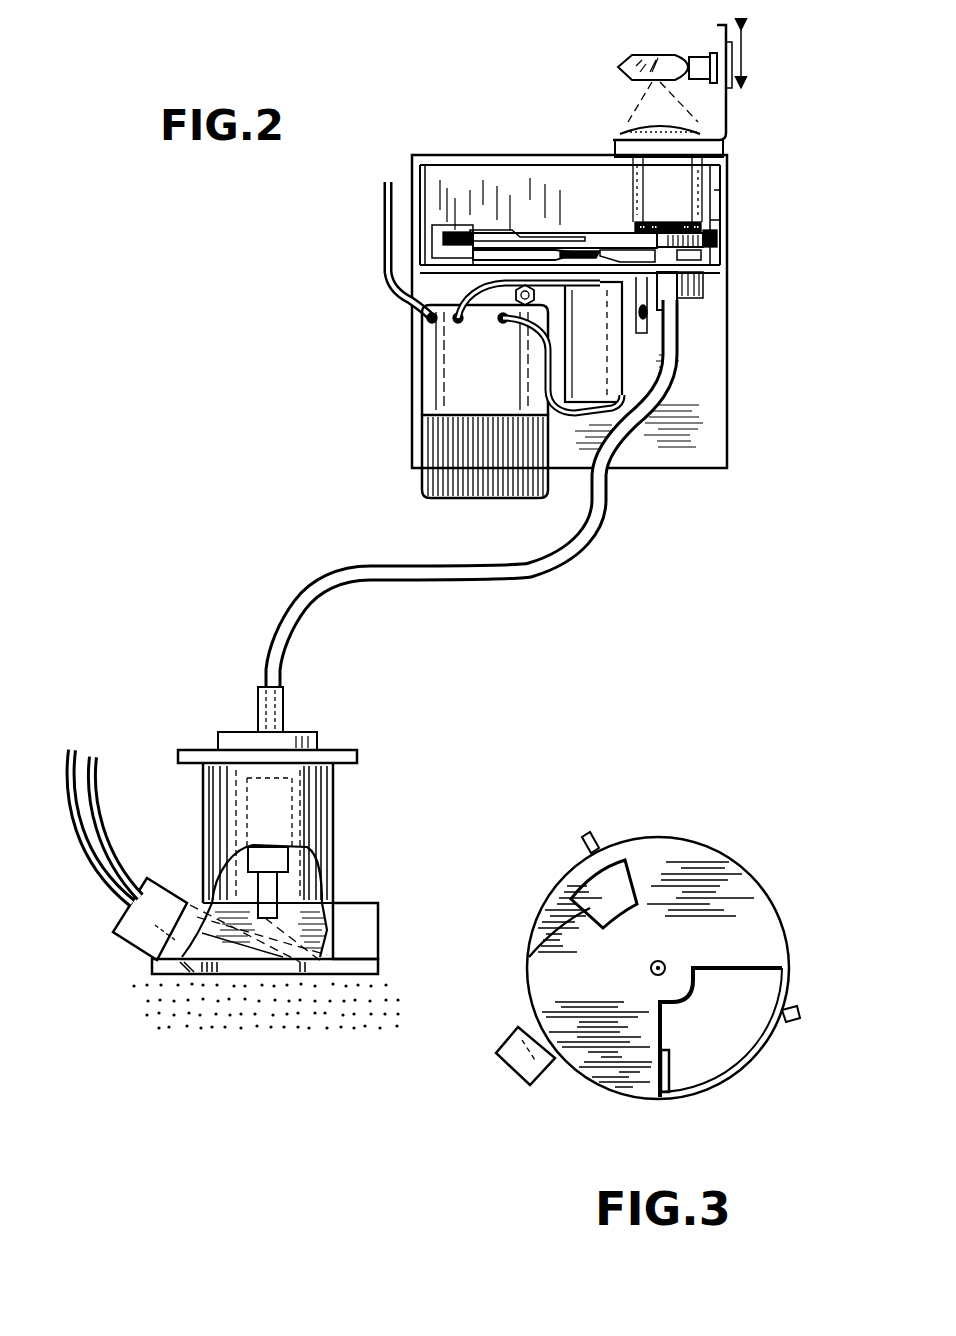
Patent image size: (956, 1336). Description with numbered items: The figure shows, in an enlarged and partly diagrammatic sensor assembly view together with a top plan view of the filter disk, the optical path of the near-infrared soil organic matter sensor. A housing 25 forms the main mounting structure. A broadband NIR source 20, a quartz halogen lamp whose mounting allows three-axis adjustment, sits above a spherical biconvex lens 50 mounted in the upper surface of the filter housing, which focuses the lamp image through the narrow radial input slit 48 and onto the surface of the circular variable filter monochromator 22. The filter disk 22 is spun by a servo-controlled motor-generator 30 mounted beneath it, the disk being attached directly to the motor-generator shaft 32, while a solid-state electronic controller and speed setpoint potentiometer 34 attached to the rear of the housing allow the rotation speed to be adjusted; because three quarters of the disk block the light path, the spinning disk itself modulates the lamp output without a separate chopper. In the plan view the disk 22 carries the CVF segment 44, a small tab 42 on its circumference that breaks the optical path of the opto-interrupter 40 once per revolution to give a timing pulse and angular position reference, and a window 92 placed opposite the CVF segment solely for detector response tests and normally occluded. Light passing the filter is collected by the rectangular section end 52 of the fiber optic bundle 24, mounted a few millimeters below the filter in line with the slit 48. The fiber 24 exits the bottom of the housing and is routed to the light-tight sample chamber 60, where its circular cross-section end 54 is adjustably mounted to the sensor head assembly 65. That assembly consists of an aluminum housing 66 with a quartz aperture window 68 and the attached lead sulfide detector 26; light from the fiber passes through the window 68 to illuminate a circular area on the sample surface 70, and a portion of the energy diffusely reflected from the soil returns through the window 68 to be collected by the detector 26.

In FIG. 2, the broadband NIR source 20 is at (650, 57).
In FIG. 2, the circular variable filter monochromator 22 is at (405, 284).
In FIG. 3, the circular variable filter monochromator 22 is at (773, 928).
In FIG. 2, the fiber optic bundle 24 is at (678, 360).
In FIG. 2, the housing 25 is at (727, 432).
In FIG. 2, the lead sulfide detector 26 is at (118, 912).
In FIG. 2, the servo-controlled motor-generator 30 is at (607, 357).
In FIG. 2, the motor-generator shaft 32 is at (700, 290).
In FIG. 2, the electronic controller and speed setpoint potentiometer 34 is at (425, 365).
In FIG. 2, the opto-interrupter 40 is at (452, 232).
In FIG. 3, the opto-interrupter 40 is at (512, 1058).
In FIG. 2, the tab 42 is at (476, 236).
In FIG. 3, the tab 42 is at (596, 834).
In FIG. 3, the CVF segment 44 is at (718, 1045).
In FIG. 2, the input slit 48 is at (650, 222).
In FIG. 3, the input slit 48 is at (676, 1065).
In FIG. 2, the spherical biconvex lens 50 is at (640, 122).
In FIG. 2, the rectangular section end 52 is at (715, 250).
In FIG. 2, the circular cross-section end 54 is at (295, 855).
In FIG. 2, the sample chamber 60 is at (196, 783).
In FIG. 2, the sensor head assembly 65 is at (186, 893).
In FIG. 2, the aluminum housing 66 is at (327, 910).
In FIG. 2, the quartz aperture window 68 is at (310, 972).
In FIG. 2, the sample surface 70 is at (188, 1002).
In FIG. 3, the window 92 is at (530, 957).